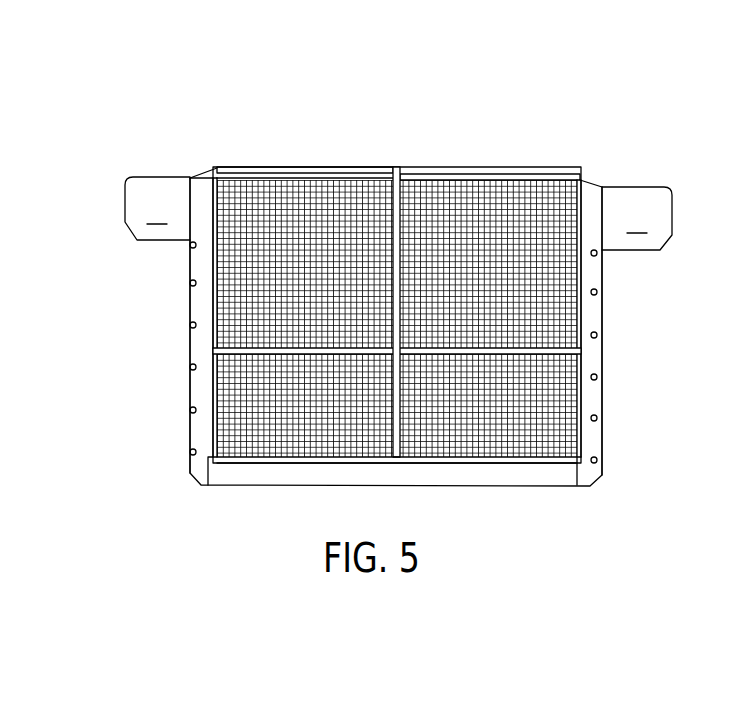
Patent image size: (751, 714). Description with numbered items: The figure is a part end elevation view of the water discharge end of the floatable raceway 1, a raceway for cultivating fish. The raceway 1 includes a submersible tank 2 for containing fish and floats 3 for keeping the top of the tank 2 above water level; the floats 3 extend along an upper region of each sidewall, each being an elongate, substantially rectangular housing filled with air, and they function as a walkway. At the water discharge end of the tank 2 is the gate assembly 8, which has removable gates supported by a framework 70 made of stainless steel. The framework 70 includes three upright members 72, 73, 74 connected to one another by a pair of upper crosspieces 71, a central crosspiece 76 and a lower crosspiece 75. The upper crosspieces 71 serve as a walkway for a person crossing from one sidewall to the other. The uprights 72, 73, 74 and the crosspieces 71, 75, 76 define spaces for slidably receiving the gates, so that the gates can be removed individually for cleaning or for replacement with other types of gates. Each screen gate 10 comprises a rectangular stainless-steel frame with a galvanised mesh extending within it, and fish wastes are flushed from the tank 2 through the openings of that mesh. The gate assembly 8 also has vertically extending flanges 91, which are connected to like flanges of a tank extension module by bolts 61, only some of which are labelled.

The floatable raceway 1 is at (212, 522).
The submersible tank 2 is at (366, 171).
The floats 3 is at (398, 213).
The gate assembly 8 is at (505, 205).
The screen gate 10 is at (335, 185).
The bolts 61 is at (190, 332).
The framework 70 is at (547, 462).
The upper crosspieces 71 is at (233, 168).
The upright member 72 is at (213, 313).
The upright member 73 is at (382, 432).
The upright member 74 is at (577, 377).
The lower crosspiece 75 is at (505, 460).
The central crosspiece 76 is at (212, 350).
The vertically extending flanges 91 is at (190, 270).